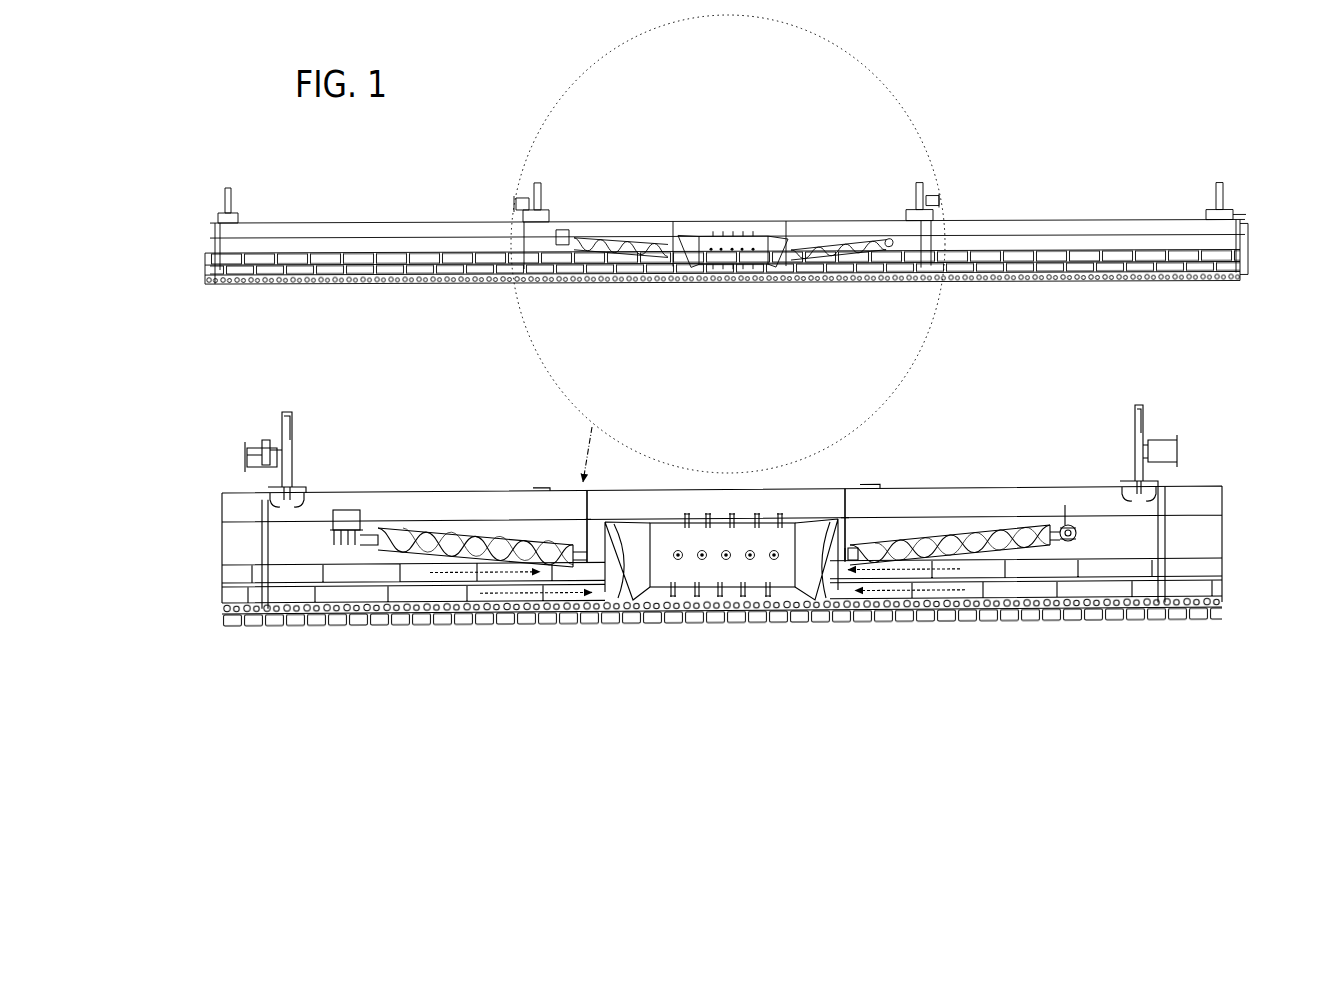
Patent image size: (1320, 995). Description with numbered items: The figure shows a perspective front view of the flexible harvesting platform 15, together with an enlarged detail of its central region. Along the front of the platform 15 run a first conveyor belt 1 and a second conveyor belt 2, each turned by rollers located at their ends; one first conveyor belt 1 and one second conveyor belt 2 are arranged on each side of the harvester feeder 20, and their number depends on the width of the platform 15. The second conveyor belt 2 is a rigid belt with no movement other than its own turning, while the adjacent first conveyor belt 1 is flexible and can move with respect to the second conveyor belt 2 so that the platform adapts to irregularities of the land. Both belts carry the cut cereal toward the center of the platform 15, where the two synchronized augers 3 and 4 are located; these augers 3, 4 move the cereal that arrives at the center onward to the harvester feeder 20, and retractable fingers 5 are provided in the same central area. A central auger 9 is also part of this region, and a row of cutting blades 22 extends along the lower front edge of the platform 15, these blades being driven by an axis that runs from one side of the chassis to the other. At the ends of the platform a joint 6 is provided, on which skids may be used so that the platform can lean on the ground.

The first conveyor belt 1 is at (237, 600).
The second conveyor belt 2 is at (237, 578).
The auger 3 is at (432, 543).
The auger 4 is at (955, 543).
The retractable fingers 5 is at (745, 593).
The joint 6 is at (262, 563).
The central auger 9 is at (657, 572).
The platform 15 is at (485, 510).
The harvester feeder 20 is at (563, 530).
The cutting blades 22 is at (1118, 617).